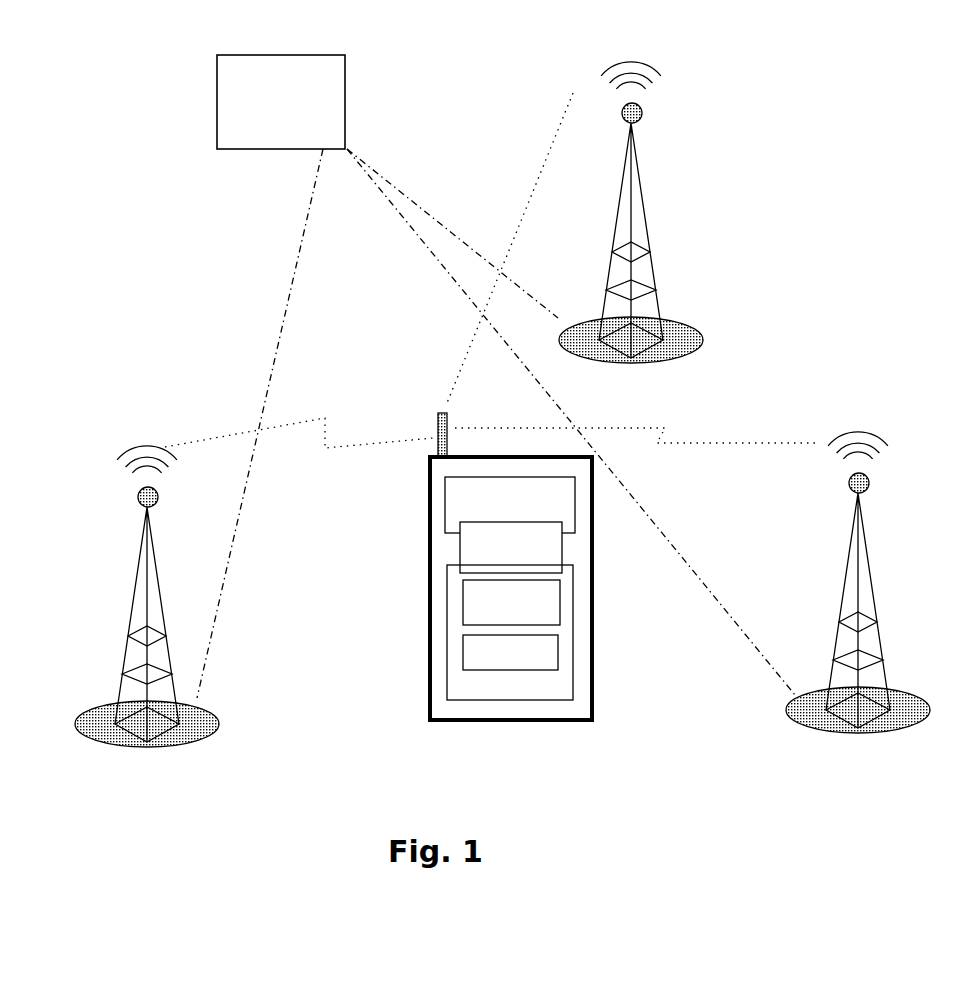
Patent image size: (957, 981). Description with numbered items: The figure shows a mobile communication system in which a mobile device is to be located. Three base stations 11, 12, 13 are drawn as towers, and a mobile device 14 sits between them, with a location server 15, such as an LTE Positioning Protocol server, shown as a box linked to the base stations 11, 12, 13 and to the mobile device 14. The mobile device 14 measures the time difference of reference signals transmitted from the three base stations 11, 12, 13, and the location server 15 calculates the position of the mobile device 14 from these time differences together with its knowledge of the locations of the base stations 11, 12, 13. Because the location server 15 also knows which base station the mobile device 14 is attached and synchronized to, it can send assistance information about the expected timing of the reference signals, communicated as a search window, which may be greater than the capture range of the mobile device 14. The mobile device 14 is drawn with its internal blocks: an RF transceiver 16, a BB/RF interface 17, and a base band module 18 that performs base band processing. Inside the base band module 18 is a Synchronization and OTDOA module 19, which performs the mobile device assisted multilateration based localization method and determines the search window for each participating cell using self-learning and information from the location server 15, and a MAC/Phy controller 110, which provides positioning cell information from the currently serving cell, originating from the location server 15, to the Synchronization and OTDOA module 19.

The base station 11 is at (779, 711).
The base station 12 is at (235, 723).
The base station 13 is at (720, 339).
The mobile device 14 is at (595, 507).
The location server 15 is at (207, 103).
The RF transceiver 16 is at (437, 502).
The BB/RF interface 17 is at (457, 550).
The base band module 18 is at (442, 688).
The Synchronization & OTDOA module 19 is at (568, 604).
The MAC/Phy controller 110 is at (560, 659).